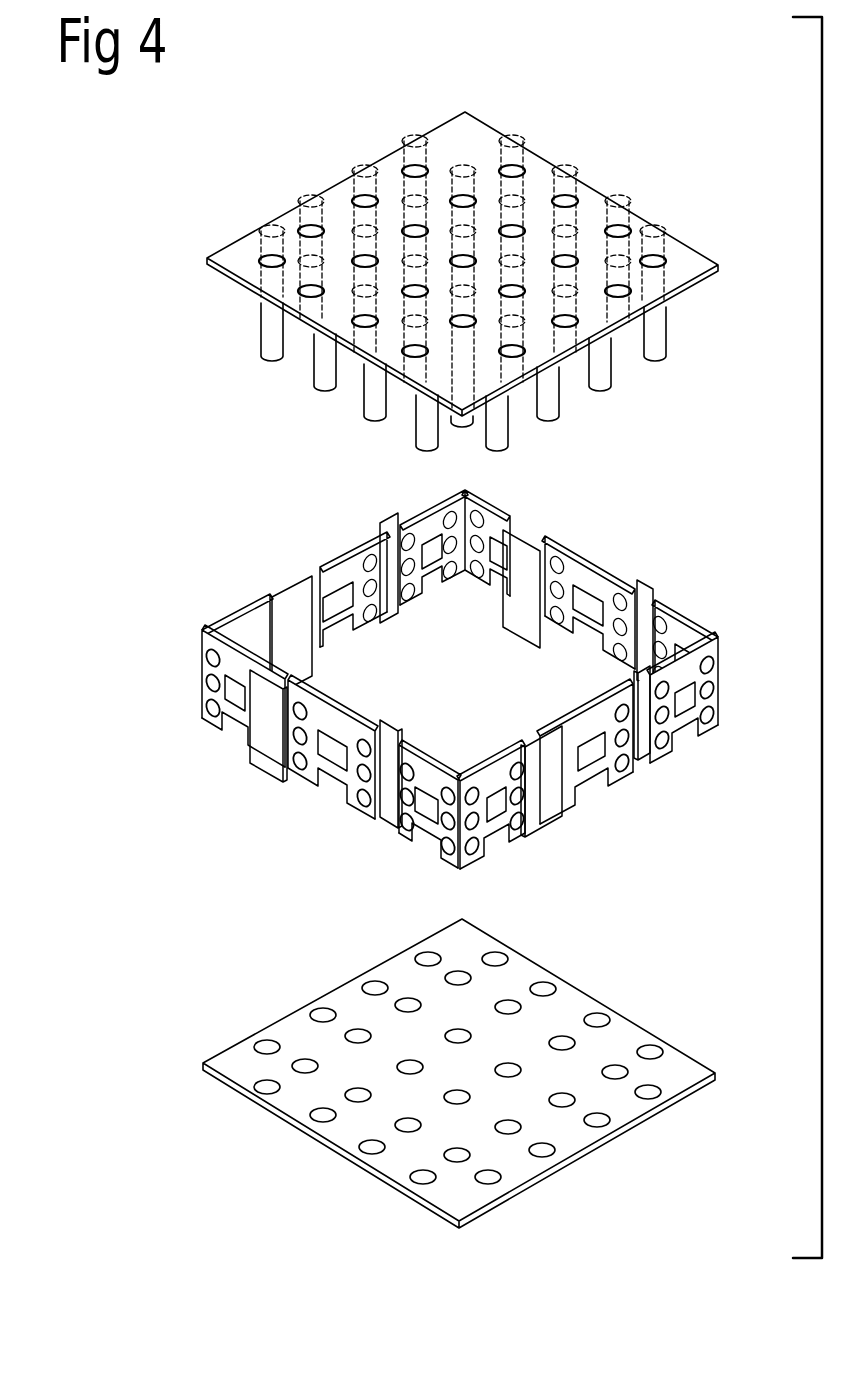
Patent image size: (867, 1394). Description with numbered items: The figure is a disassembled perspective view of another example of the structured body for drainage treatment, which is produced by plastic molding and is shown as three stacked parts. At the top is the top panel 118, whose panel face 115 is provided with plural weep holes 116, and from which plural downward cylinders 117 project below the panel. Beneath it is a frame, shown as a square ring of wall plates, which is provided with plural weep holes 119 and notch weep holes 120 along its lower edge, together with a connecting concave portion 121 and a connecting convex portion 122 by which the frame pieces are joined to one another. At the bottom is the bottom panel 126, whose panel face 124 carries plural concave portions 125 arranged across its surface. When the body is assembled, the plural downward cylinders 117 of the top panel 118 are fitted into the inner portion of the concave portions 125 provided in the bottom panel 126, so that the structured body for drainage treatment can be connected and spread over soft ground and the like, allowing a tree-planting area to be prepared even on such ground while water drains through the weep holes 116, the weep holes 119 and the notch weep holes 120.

The panel face 115 is at (525, 195).
The weep holes 116 is at (417, 168).
The downward cylinders 117 is at (615, 203).
The top panel 118 is at (565, 116).
The weep holes 119 is at (360, 545).
The notch weep holes 120 is at (325, 562).
The connecting concave portion 121 is at (272, 610).
The connecting convex portion 122 is at (383, 525).
The panel face 124 is at (555, 1012).
The concave portions 125 is at (358, 1030).
The bottom panel 126 is at (664, 1022).